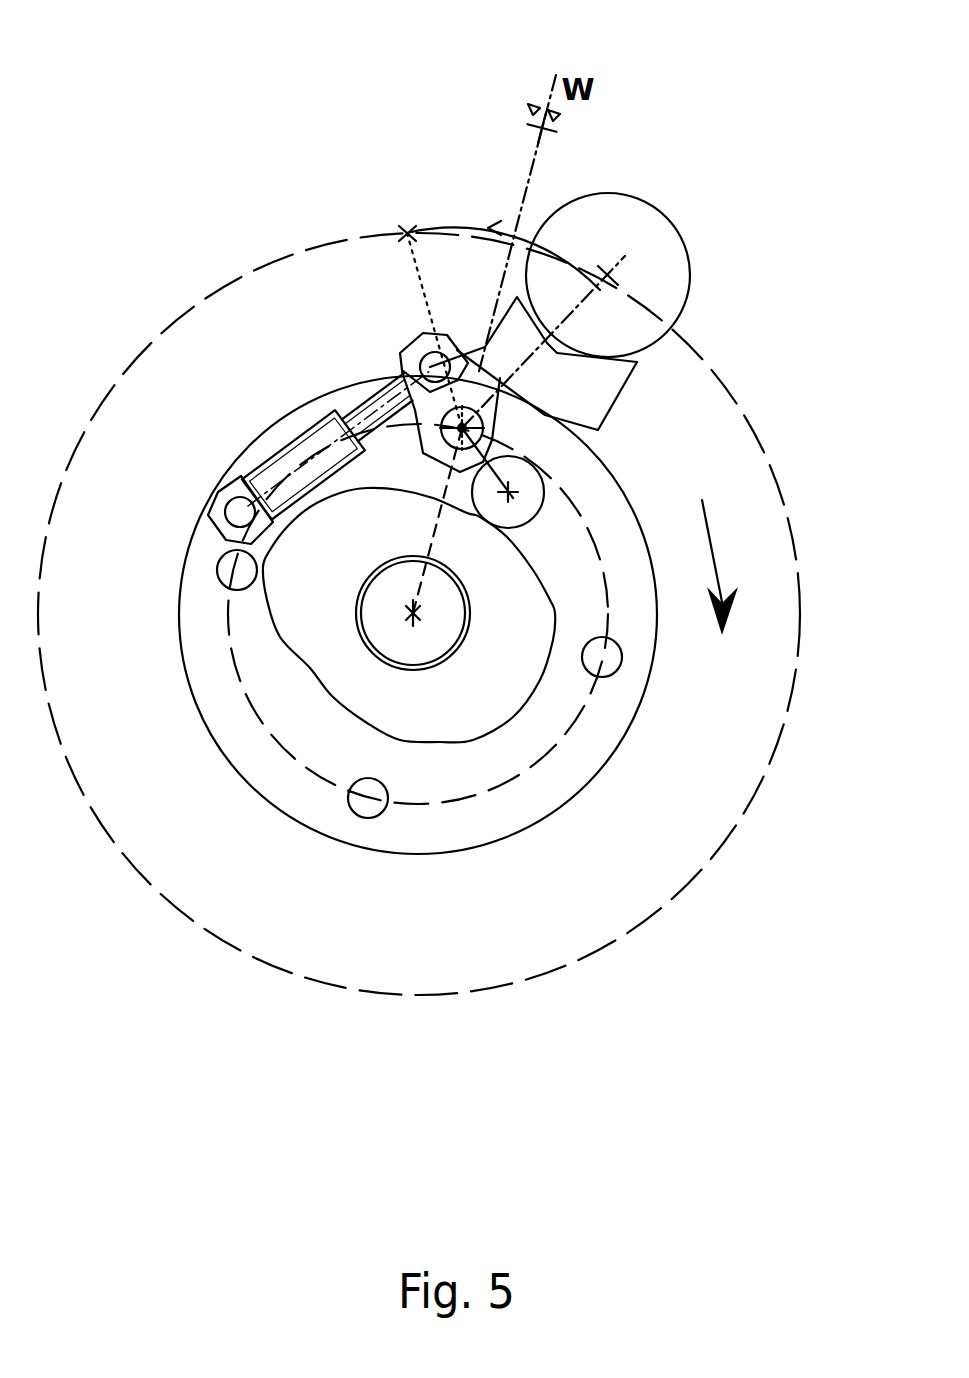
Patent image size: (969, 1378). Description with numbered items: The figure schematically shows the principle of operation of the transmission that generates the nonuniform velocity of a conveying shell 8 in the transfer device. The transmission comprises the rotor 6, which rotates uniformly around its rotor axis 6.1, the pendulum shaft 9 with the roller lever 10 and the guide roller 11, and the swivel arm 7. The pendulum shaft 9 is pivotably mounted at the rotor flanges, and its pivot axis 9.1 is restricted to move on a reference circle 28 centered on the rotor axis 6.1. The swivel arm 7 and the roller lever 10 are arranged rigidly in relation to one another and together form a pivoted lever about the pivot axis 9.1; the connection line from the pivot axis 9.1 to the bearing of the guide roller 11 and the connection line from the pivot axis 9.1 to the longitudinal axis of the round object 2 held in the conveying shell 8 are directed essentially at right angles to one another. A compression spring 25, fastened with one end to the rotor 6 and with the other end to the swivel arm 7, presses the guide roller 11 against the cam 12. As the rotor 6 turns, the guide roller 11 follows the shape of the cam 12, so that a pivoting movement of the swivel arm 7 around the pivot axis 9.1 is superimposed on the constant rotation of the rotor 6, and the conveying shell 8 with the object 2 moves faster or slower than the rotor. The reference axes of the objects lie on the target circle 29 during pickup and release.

The object 2 is at (625, 227).
The rotor 6 is at (360, 285).
The rotor axis 6.1 is at (413, 613).
The swivel arm 7 is at (533, 355).
The conveying shell 8 is at (605, 385).
The pendulum shaft 9 is at (462, 428).
The pivot axis 9.1 is at (470, 428).
The roller lever 10 is at (482, 455).
The guide roller 11 is at (523, 502).
The cam 12 is at (537, 690).
The compression spring 25 is at (352, 400).
The reference circle 28 is at (500, 782).
The target circle 29 is at (678, 885).